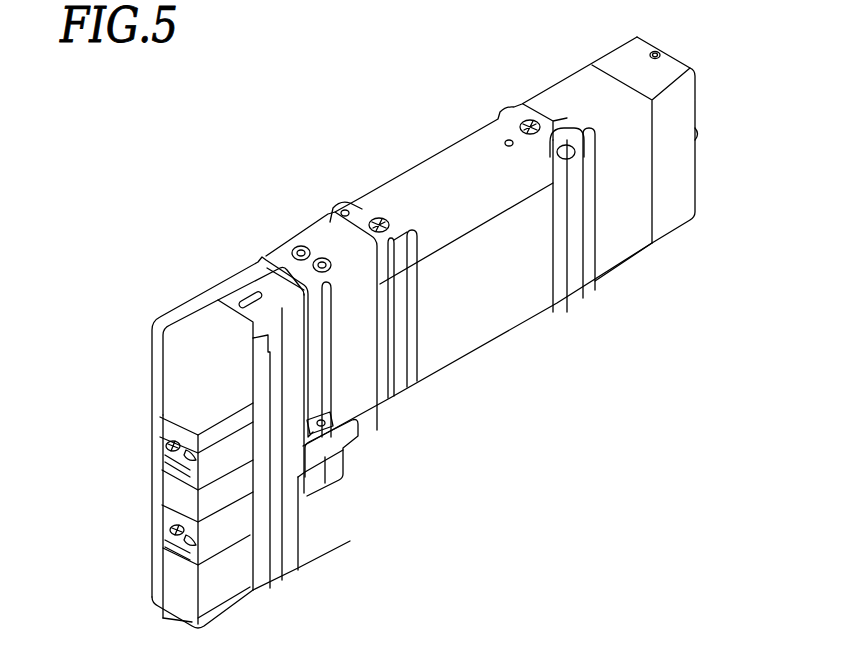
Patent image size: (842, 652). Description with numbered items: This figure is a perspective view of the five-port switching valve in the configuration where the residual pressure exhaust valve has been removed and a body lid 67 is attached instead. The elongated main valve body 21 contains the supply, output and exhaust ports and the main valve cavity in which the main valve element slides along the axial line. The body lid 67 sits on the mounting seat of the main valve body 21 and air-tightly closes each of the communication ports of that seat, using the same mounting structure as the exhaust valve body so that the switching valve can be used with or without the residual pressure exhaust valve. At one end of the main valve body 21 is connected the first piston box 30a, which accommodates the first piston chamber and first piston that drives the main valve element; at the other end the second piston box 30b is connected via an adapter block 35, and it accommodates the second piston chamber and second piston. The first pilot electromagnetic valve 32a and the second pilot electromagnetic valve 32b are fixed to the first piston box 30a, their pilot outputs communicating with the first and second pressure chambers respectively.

The main valve body 21 is at (521, 335).
The body lid 67 is at (447, 165).
The adapter block 35 is at (621, 272).
The first piston box 30a is at (284, 232).
The second piston box 30b is at (681, 233).
The first pilot electromagnetic valve 32a is at (200, 330).
The second pilot electromagnetic valve 32b is at (228, 580).